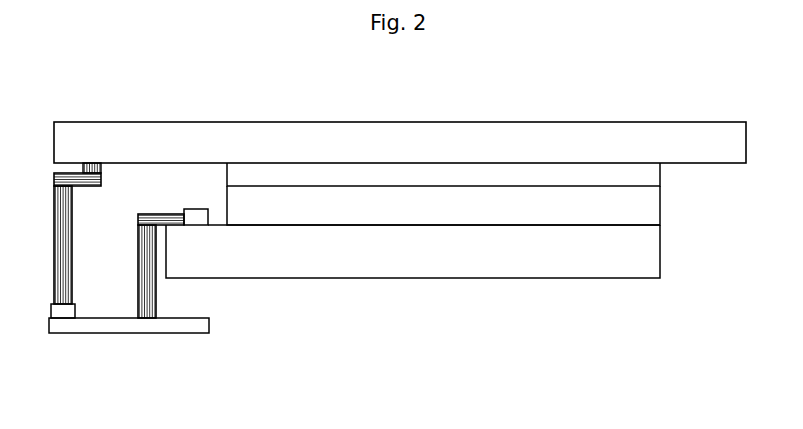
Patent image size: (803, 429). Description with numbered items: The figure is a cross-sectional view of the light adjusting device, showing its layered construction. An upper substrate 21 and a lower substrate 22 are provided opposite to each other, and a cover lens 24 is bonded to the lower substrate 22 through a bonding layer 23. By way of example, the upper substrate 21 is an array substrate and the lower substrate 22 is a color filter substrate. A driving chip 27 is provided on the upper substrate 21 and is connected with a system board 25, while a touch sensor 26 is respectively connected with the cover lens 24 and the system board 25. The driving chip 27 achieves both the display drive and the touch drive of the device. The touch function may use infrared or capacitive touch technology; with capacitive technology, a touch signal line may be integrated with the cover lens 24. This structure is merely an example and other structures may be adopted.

The upper substrate 21 is at (327, 260).
The lower substrate 22 is at (418, 212).
The bonding layer 23 is at (537, 170).
The cover lens 24 is at (385, 152).
The system board 25 is at (127, 322).
The touch sensor 26 is at (62, 312).
The driving chip 27 is at (198, 220).